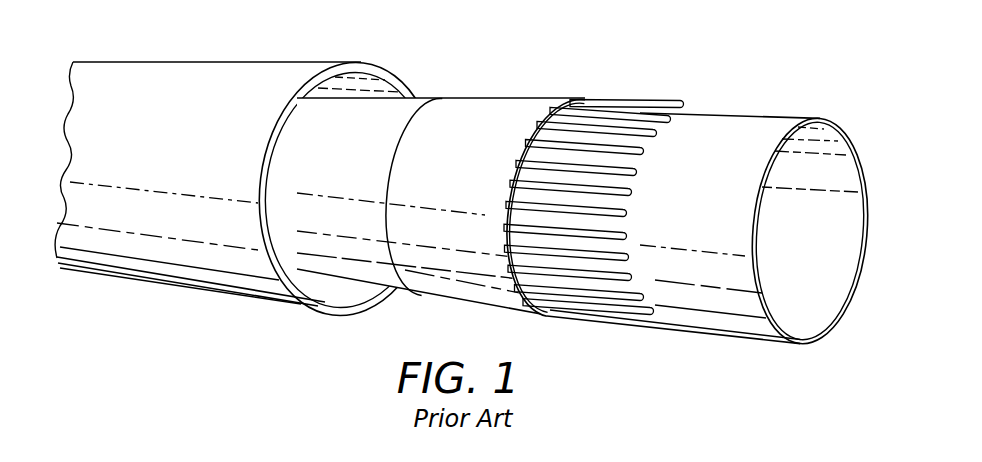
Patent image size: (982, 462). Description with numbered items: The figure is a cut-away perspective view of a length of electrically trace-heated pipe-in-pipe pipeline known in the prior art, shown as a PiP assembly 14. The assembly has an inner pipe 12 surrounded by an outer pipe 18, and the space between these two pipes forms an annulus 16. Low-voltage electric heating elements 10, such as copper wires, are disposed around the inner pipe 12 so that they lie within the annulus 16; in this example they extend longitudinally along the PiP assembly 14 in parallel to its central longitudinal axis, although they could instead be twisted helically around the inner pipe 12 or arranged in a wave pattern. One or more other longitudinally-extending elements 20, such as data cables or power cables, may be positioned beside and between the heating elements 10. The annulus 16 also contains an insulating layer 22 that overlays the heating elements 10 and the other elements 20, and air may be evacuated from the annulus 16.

The electric heating elements 10 is at (629, 103).
The inner pipe 12 is at (745, 124).
The PiP assembly 14 is at (563, 51).
The annulus 16 is at (371, 80).
The outer pipe 18 is at (201, 71).
The longitudinally-extending elements 20 is at (634, 153).
The insulating layer 22 is at (478, 105).